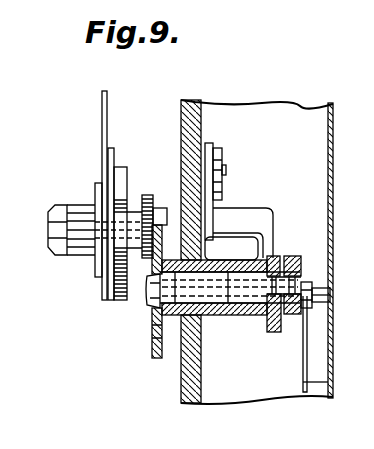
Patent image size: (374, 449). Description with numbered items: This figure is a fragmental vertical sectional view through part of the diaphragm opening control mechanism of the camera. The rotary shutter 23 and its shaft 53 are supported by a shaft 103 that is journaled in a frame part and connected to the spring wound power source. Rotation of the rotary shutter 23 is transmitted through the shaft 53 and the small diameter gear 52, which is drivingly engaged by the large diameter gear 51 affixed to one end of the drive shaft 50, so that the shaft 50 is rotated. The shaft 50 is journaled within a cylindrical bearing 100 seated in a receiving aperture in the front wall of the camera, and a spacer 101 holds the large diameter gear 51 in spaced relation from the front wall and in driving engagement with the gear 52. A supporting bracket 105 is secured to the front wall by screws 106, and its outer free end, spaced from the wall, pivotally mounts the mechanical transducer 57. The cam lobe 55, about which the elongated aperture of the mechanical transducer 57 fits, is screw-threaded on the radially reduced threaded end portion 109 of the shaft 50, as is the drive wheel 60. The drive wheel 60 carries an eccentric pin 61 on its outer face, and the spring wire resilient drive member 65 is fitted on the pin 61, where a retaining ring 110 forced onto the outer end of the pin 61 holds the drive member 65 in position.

The rotary shutter 23 is at (107, 107).
The shaft 53 is at (137, 196).
The small diameter gear 52 is at (153, 196).
The shaft 103 is at (53, 238).
The spacer 101 is at (152, 331).
The large diameter gear 51 is at (152, 348).
The screws 106 is at (224, 186).
The supporting bracket 105 is at (249, 214).
The cylindrical bearing 100 is at (214, 276).
The cam lobe 55 is at (292, 256).
The radially reduced threaded end portion 109 is at (305, 290).
The retaining ring 110 is at (331, 300).
The pin 61 is at (331, 318).
The resilient drive member 65 is at (306, 382).
The shaft 50 is at (216, 300).
The mechanical transducer 57 is at (270, 330).
The drive wheel 60 is at (288, 322).